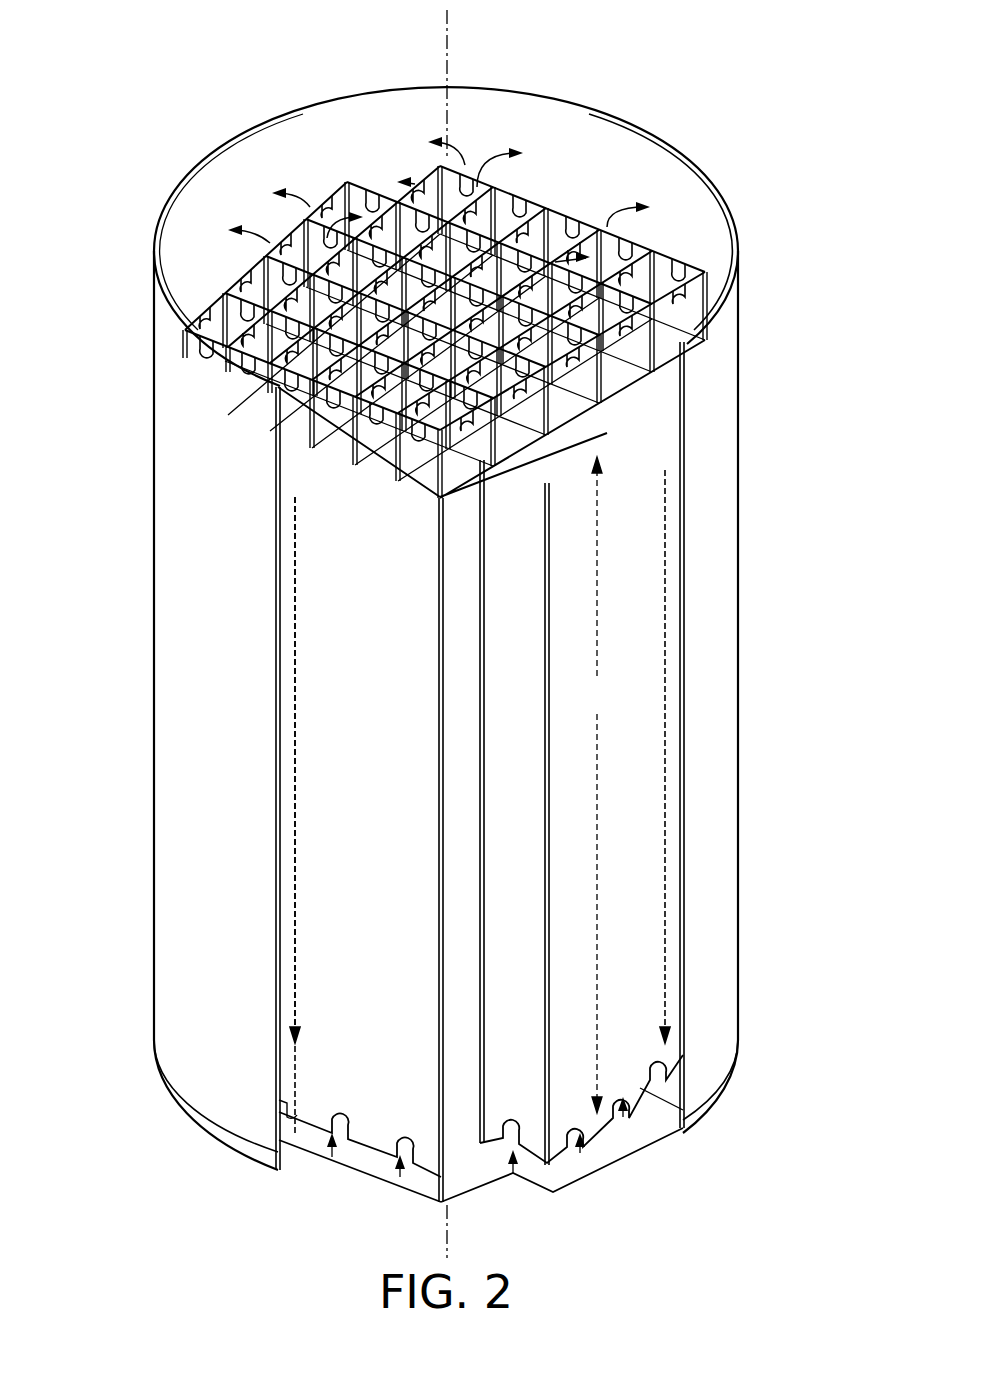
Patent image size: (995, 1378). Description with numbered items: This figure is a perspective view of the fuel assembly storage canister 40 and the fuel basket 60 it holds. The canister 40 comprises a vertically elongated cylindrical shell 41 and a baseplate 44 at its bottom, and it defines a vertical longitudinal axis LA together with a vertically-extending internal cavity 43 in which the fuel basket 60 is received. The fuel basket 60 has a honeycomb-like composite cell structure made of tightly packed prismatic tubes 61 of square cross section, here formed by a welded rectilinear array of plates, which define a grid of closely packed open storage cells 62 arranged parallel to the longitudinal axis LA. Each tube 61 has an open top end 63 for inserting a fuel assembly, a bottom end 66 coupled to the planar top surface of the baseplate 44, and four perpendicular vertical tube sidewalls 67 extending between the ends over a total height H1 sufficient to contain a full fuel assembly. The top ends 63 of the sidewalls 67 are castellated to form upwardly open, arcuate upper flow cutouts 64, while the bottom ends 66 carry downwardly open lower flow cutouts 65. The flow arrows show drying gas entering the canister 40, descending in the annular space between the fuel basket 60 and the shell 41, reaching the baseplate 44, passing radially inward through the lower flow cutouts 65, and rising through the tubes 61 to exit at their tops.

The fuel assembly storage canister 40 is at (88, 280).
The cylindrical shell 41 is at (738, 670).
The internal cavity 43 is at (256, 200).
The baseplate 44 is at (240, 1149).
The fuel basket 60 is at (502, 254).
The prismatic tubes 61 is at (710, 283).
The storage cells 62 is at (563, 213).
The open top end 63 is at (357, 180).
The upper flow cutout 64 is at (668, 262).
The lower flow cutout 65 is at (343, 1127).
The bottom end 66 is at (593, 1127).
The tube sidewalls 67 is at (235, 328).
The longitudinal axis LA is at (447, 73).
The height H1 is at (600, 785).